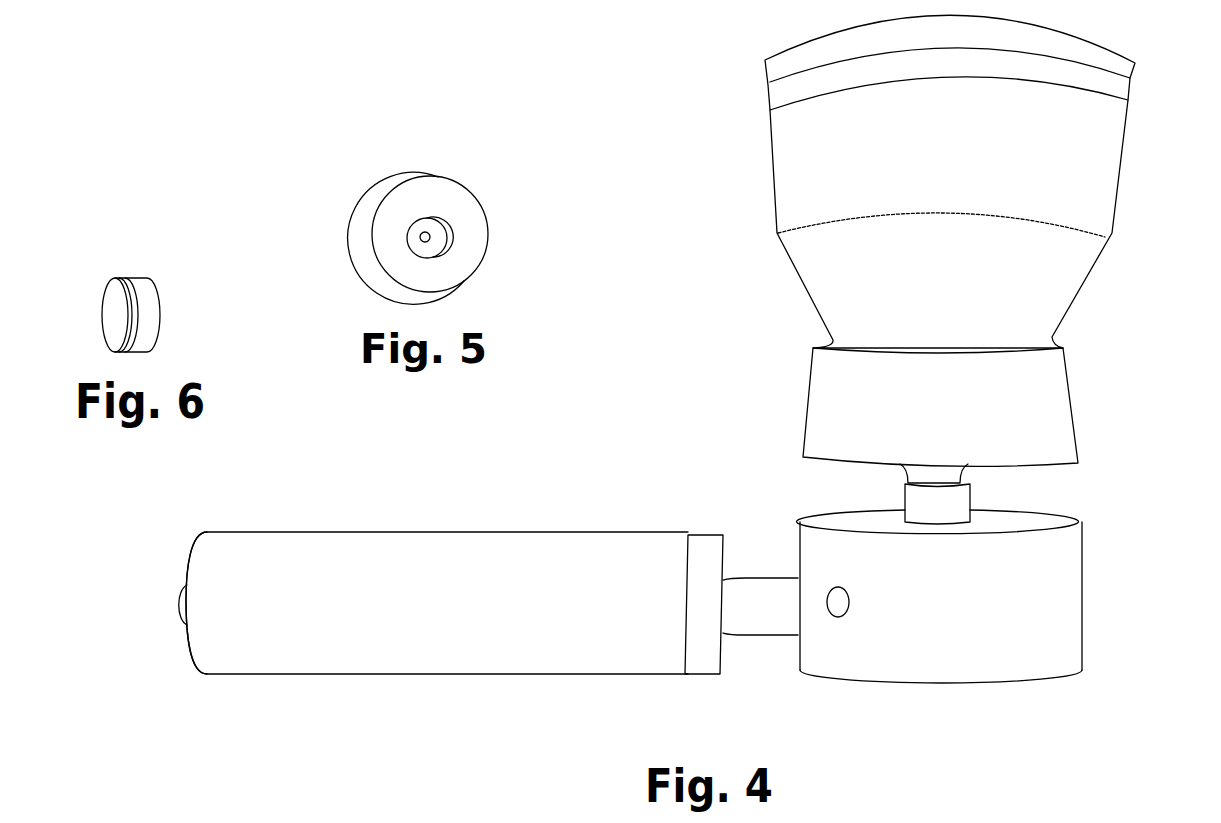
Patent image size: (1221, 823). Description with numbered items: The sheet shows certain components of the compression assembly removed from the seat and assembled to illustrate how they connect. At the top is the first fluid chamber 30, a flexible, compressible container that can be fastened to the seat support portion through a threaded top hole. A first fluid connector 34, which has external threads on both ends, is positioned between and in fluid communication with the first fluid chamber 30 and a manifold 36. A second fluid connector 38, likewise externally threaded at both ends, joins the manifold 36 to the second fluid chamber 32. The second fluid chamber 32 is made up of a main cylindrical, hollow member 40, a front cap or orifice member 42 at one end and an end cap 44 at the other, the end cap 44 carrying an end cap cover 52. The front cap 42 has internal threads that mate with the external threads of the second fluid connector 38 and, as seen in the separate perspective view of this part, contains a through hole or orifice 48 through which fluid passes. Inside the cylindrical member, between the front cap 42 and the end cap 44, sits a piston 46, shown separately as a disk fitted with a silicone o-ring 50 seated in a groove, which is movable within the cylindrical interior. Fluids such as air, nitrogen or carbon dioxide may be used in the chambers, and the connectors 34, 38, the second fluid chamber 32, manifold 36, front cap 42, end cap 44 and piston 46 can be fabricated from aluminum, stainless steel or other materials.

In FIG. 4, the first fluid chamber 30 is at (1097, 267).
In FIG. 4, the second fluid chamber 32 is at (460, 683).
In FIG. 4, the first fluid connector 34 is at (970, 497).
In FIG. 4, the manifold 36 is at (1067, 623).
In FIG. 4, the second fluid connector 38 is at (748, 636).
In FIG. 4, the main cylindrical hollow member 40 is at (505, 532).
In FIG. 4, the front cap 42 is at (710, 535).
In FIG. 5, the front cap 42 is at (465, 202).
In FIG. 4, the end cap 44 is at (222, 532).
In FIG. 6, the piston 46 is at (155, 306).
In FIG. 5, the orifice 48 is at (433, 237).
In FIG. 6, the o-ring 50 is at (136, 279).
In FIG. 4, the end cap cover 52 is at (177, 603).